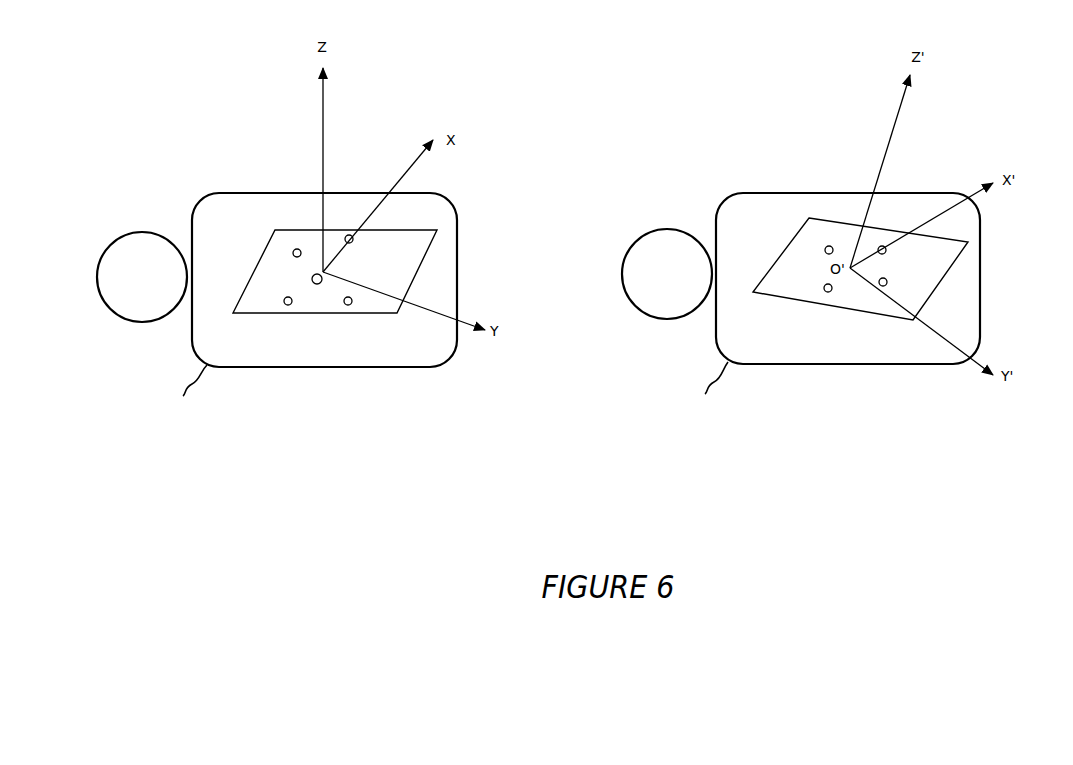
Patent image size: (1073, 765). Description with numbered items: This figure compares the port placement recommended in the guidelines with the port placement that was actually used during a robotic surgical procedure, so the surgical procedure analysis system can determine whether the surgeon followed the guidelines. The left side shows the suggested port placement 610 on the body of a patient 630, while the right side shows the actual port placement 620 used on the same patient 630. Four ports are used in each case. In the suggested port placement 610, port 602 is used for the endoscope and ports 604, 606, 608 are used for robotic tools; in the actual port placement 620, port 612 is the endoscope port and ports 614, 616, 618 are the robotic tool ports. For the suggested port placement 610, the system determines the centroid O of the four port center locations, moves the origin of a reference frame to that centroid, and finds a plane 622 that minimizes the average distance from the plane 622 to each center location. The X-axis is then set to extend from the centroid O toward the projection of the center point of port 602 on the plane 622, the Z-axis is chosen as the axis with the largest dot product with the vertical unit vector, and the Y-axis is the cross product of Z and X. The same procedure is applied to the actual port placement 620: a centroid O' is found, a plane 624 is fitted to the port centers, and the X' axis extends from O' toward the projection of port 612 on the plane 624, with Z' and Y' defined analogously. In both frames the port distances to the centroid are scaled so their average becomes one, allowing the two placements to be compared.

The port 602 is at (353, 241).
The port 604 is at (351, 304).
The port 606 is at (290, 304).
The port 608 is at (294, 250).
The suggested port placement 610 is at (373, 455).
The port 612 is at (885, 252).
The port 614 is at (884, 285).
The port 616 is at (830, 291).
The port 618 is at (829, 246).
The actual port placement 620 is at (840, 455).
The plane 622 is at (255, 313).
The plane 624 is at (775, 296).
The patient 630 is at (441, 386).